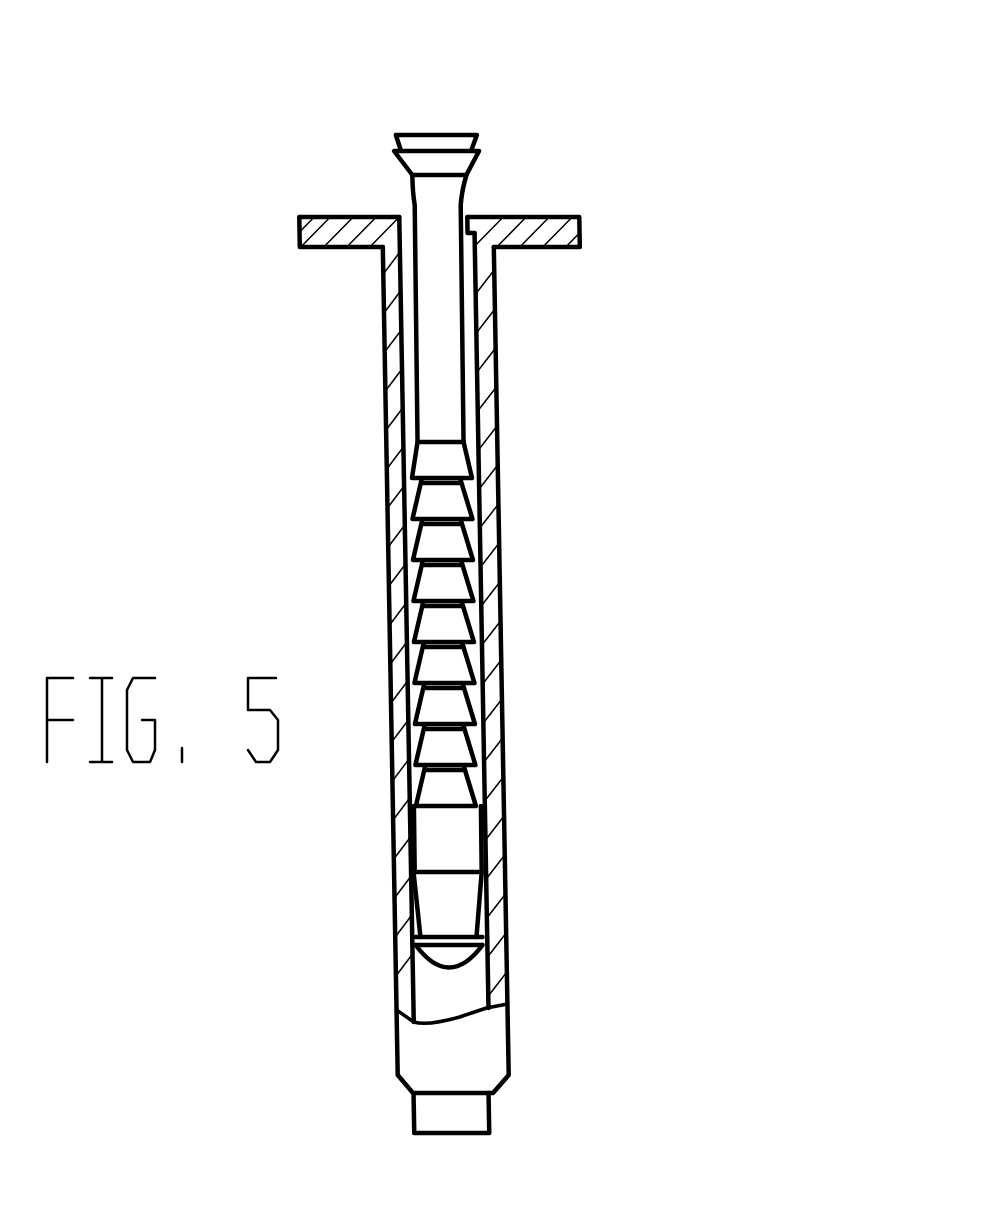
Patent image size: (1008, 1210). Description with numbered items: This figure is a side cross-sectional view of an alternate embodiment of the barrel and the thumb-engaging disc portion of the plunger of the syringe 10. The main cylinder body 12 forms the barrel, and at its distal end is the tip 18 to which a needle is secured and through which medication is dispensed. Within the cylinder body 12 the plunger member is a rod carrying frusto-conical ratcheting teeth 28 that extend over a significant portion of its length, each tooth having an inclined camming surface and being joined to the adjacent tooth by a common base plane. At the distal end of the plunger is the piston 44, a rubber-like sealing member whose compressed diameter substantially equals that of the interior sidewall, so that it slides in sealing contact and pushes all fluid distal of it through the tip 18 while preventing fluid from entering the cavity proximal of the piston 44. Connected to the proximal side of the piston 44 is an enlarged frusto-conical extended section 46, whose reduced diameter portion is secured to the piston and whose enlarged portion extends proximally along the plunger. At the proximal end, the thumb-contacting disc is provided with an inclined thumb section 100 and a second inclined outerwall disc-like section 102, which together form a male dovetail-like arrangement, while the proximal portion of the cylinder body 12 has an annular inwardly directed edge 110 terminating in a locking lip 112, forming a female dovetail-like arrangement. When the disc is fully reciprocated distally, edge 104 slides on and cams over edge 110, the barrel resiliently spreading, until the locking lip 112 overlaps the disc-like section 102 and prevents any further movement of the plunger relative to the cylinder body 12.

The syringe 10 is at (683, 425).
The main cylinder body 12 is at (517, 650).
The tip 18 is at (473, 1117).
The frusto-conical ratcheting teeth 28 is at (460, 553).
The piston 44 is at (490, 954).
The frusto-conical extended section 46 is at (455, 907).
The inclined thumb section 100 is at (480, 507).
The second inclined outerwall disc-like section 102 is at (480, 162).
The edge 104 is at (413, 172).
The annular inwardly directed edge 110 is at (467, 225).
The locking lip 112 is at (412, 240).